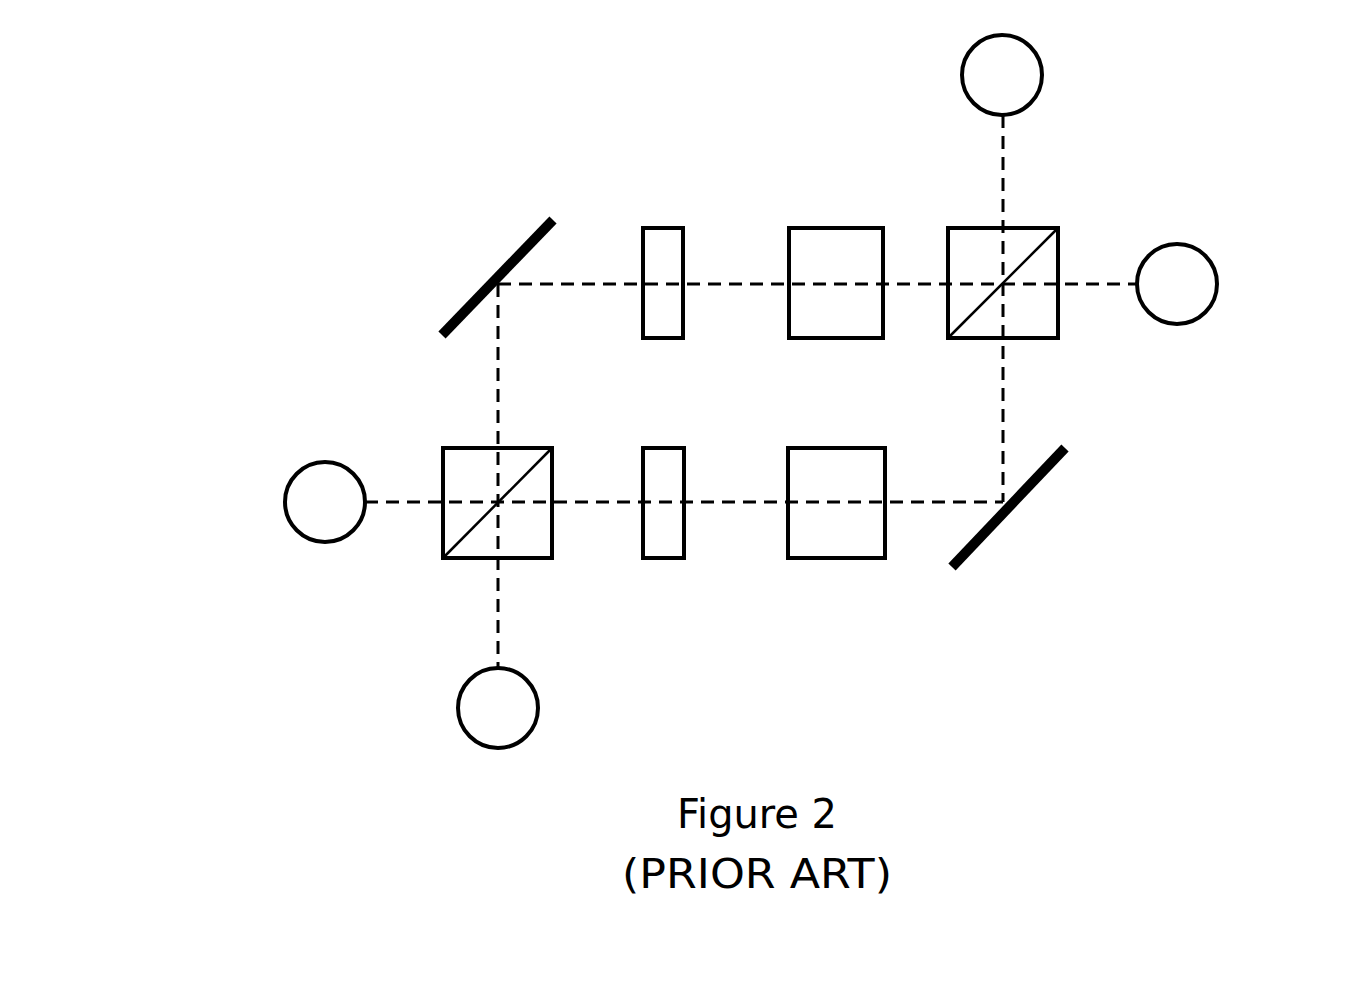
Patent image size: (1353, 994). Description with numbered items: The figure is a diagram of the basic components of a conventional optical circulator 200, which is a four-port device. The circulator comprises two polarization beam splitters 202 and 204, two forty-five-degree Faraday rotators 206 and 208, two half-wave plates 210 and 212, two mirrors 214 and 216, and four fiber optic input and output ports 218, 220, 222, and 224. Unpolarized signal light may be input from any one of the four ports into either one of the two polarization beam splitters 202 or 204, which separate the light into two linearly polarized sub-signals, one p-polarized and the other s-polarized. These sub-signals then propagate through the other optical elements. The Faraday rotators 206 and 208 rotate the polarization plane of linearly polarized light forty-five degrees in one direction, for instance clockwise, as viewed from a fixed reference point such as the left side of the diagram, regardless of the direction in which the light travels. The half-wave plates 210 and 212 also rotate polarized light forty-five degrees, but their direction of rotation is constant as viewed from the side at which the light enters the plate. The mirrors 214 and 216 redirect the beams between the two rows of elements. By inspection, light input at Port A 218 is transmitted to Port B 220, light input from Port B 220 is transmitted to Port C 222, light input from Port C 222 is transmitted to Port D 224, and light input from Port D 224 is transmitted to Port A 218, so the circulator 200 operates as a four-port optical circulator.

The optical circulator 200 is at (458, 63).
The polarization beam splitter 202 is at (443, 533).
The polarization beam splitter 204 is at (1062, 255).
The 45-degree Faraday rotator 206 is at (658, 560).
The 45-degree Faraday rotator 208 is at (643, 228).
The half-wave plate 210 is at (830, 560).
The half-wave plate 212 is at (792, 228).
The mirror 214 is at (1020, 508).
The mirror 216 is at (495, 272).
The Port A 218 is at (300, 540).
The Port B 220 is at (1205, 250).
The Port C 222 is at (463, 728).
The Port D 224 is at (1042, 75).